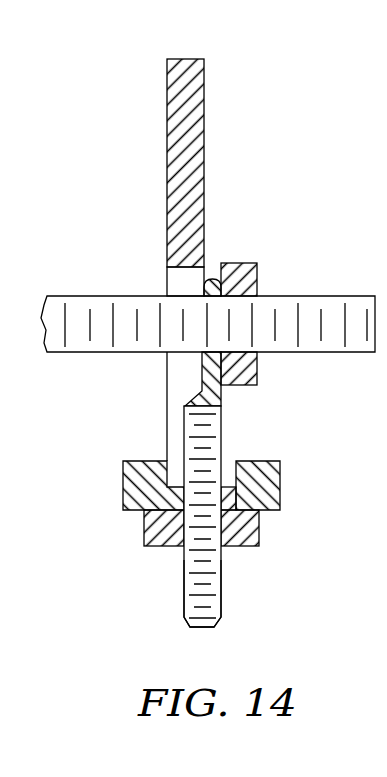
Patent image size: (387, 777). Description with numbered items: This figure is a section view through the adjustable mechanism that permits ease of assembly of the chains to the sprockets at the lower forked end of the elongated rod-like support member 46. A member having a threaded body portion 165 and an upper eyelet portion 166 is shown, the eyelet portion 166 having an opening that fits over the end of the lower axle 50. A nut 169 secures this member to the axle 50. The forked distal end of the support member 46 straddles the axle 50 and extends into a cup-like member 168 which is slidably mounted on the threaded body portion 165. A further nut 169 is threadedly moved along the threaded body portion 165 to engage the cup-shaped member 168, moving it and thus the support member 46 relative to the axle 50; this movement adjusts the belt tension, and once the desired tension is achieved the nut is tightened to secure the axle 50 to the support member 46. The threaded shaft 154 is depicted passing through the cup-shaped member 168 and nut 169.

The elongated rod-like support member 46 is at (167, 100).
The lower axle 50 is at (130, 296).
The upper eyelet portion 166 is at (255, 263).
The nut 169 is at (167, 408).
The threaded shaft 154 is at (221, 447).
The cup-like member 168 is at (123, 484).
The threaded body portion 165 is at (220, 575).